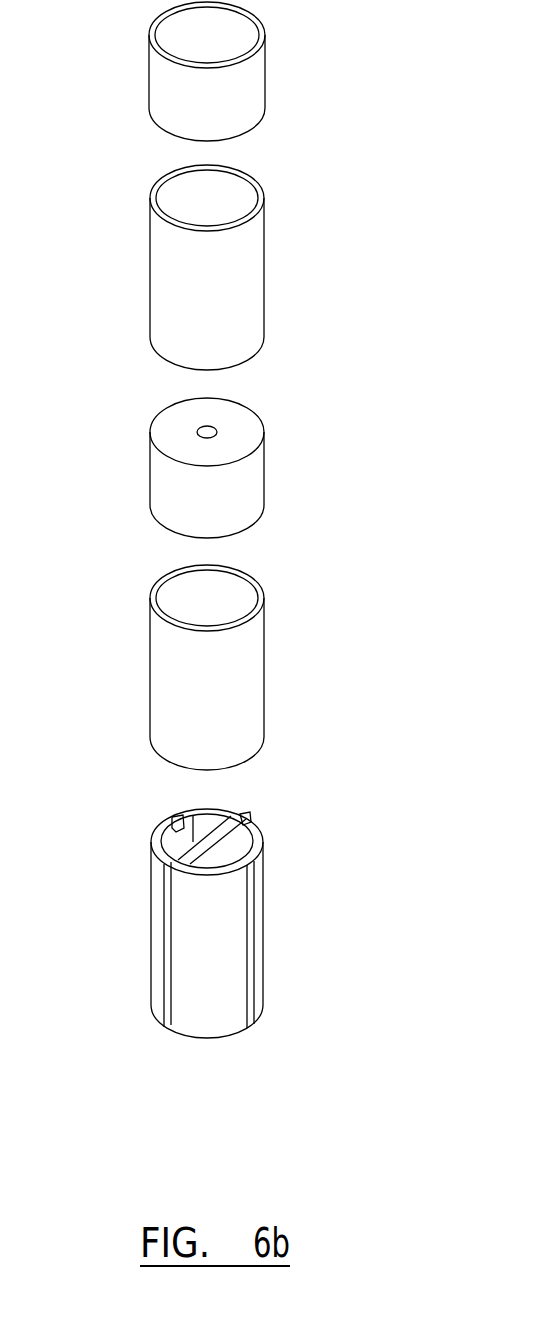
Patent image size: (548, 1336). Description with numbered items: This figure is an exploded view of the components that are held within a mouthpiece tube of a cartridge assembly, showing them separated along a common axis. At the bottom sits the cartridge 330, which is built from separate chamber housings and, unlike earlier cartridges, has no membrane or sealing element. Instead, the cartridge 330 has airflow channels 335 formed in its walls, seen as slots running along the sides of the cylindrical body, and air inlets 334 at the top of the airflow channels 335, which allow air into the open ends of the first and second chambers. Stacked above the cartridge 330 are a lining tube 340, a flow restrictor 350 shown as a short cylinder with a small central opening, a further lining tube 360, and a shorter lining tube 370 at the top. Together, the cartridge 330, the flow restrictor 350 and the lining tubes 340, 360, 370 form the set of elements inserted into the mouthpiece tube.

The cartridge 330 is at (265, 920).
The air inlets 334 is at (175, 818).
The airflow channels 335 is at (167, 1030).
The lining tube 340 is at (264, 665).
The flow restrictor 350 is at (264, 467).
The lining tube 360 is at (264, 263).
The lining tube 370 is at (265, 68).